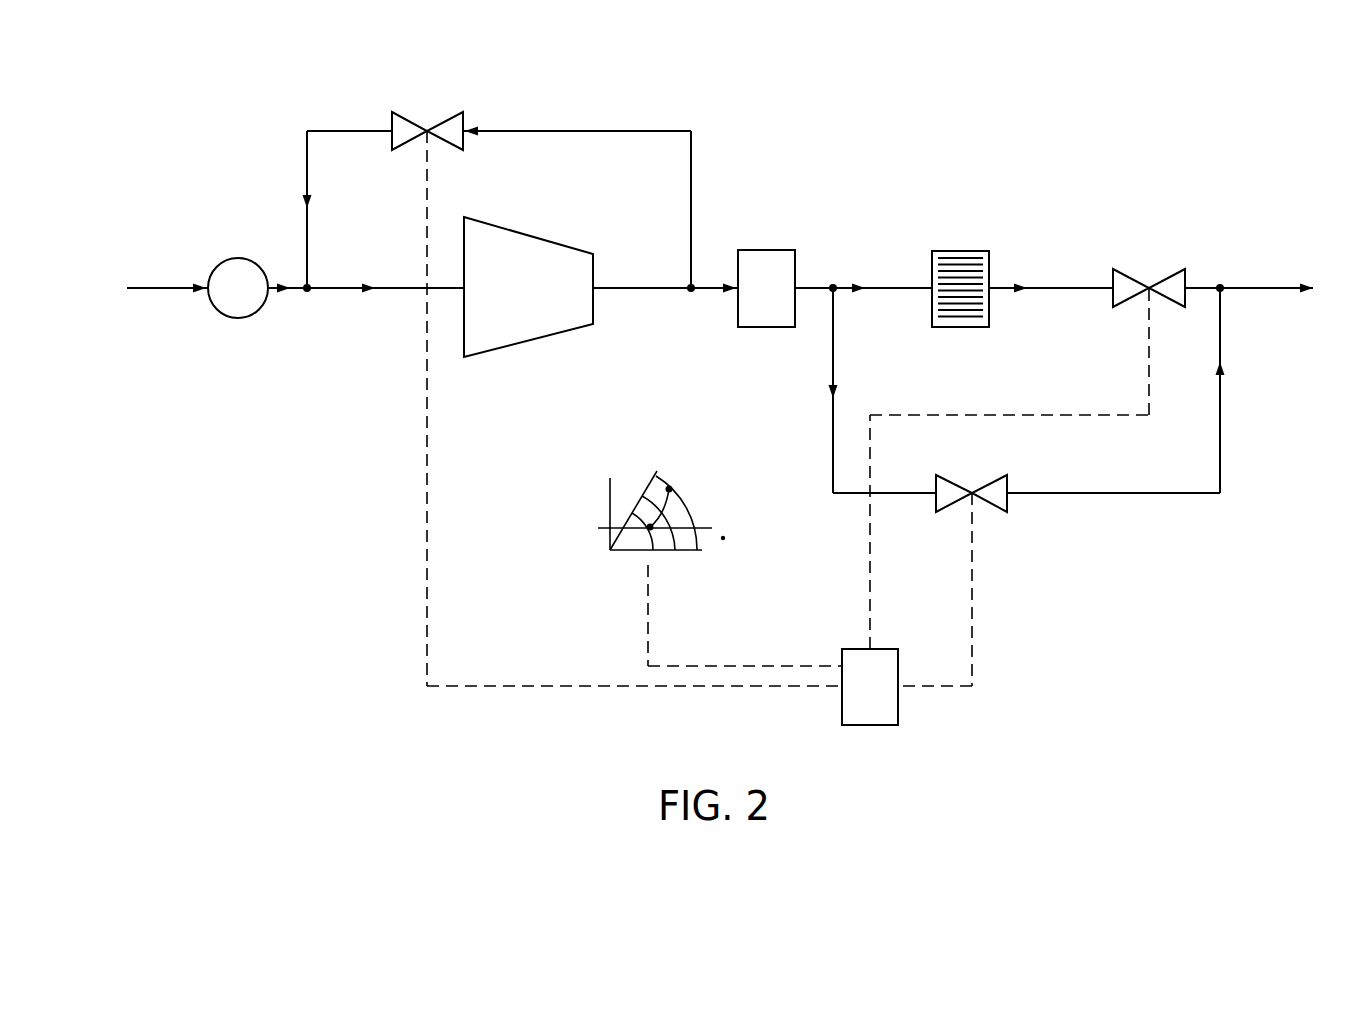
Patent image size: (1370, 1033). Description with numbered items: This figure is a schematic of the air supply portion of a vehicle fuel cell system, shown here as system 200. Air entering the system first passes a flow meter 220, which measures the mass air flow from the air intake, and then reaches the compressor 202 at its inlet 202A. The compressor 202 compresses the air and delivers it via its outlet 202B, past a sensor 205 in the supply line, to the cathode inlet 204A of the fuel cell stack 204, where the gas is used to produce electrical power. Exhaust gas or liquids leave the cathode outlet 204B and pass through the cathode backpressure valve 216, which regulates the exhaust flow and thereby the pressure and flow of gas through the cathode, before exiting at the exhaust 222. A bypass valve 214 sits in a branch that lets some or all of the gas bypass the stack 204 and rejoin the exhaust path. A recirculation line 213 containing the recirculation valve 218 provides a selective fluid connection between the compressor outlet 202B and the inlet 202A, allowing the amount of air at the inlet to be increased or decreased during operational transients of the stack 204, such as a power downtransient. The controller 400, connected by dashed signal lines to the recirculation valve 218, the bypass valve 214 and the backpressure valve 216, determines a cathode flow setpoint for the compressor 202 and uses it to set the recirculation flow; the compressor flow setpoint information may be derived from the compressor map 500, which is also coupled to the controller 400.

The compressor system 200 is at (235, 118).
The compressor 202 is at (529, 343).
The inlet 202A is at (368, 288).
The outlet 202B is at (627, 287).
The fuel cell stack 204 is at (958, 251).
The cathode inlet 204A is at (858, 288).
The cathode outlet 204B is at (1020, 288).
The flow sensor 205 is at (762, 250).
The recirculation line 213 is at (307, 200).
The bypass valve 214 is at (1007, 505).
The cathode backpressure valve 216 is at (1167, 275).
The recirculation valve 218 is at (426, 128).
The flow meter 220 is at (238, 258).
The exhaust 222 is at (1250, 288).
The controller 400 is at (898, 705).
The compressor map 500 is at (578, 533).